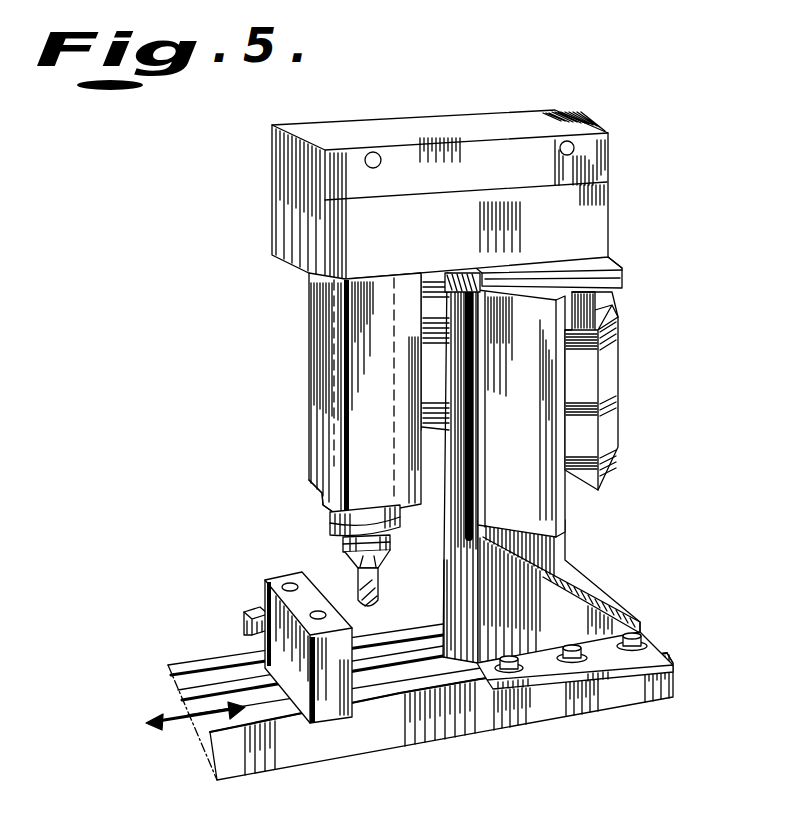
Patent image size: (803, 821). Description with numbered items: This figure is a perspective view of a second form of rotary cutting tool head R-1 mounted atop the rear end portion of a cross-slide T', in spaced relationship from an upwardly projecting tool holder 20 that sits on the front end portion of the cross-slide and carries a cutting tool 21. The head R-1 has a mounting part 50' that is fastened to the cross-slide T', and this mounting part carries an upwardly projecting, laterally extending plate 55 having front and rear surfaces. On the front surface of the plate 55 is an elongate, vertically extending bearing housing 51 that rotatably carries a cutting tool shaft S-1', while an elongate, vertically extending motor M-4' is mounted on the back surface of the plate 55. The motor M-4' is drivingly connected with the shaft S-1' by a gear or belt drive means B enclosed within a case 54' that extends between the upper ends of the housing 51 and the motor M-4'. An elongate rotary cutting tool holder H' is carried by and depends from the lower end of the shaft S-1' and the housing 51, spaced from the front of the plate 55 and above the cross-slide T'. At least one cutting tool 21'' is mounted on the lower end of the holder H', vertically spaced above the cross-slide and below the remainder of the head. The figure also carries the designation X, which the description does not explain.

The drive means B is at (271, 197).
The case 54' is at (521, 167).
The rotary cutting tool head R-1 is at (309, 335).
The bearing housing 51 is at (318, 384).
The cutting tool shaft S-1' is at (288, 389).
The cutting tool holder H' is at (312, 536).
The motor M-4' is at (641, 391).
The plate 55 is at (478, 500).
The tool holder 20 is at (266, 581).
The cutting tool 21 is at (204, 621).
The cutting tool 21'' is at (462, 595).
The mounting part 50' is at (577, 684).
The cross-slide T' is at (361, 702).
The axis of table movement X is at (193, 742).